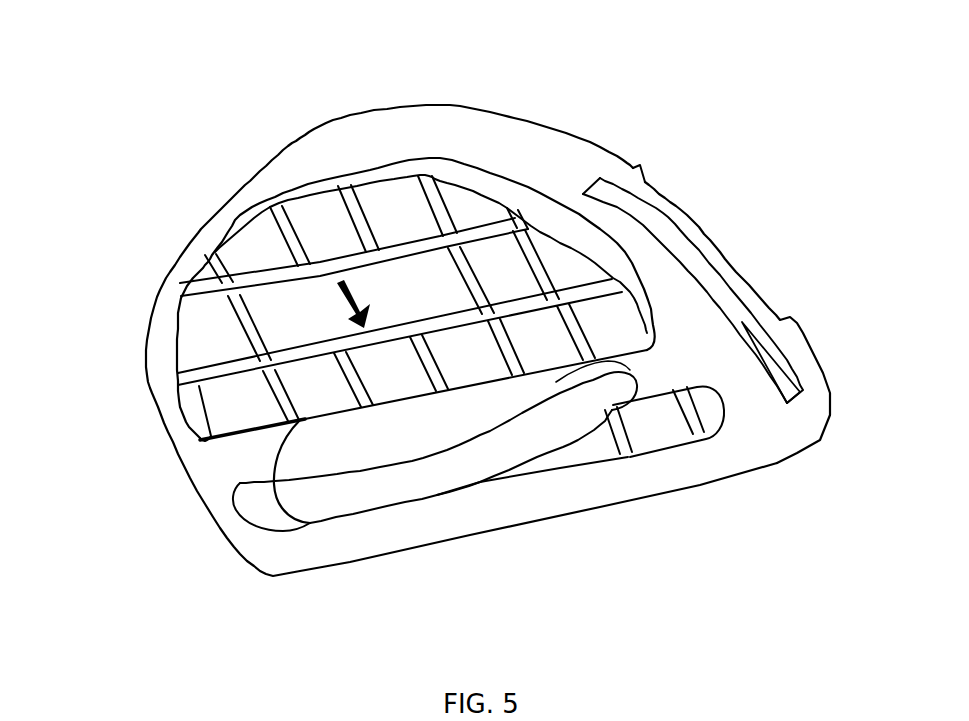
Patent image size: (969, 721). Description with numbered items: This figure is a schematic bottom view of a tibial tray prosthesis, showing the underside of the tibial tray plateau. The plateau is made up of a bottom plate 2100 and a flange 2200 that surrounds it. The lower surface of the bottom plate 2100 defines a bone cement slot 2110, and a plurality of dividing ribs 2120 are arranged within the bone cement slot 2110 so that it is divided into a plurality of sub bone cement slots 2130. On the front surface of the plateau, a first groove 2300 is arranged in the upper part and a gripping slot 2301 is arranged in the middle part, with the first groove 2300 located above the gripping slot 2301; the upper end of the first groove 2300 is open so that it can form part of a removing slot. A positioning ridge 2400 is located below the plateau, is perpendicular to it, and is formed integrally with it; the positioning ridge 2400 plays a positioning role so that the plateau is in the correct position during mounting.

The bottom plate 2100 is at (213, 473).
The flange 2200 is at (440, 110).
The bone cement slot 2110 is at (183, 338).
The dividing ribs 2120 is at (290, 247).
The sub bone cement slots 2130 is at (235, 408).
The first groove 2300 is at (750, 273).
The gripping slot 2301 is at (737, 307).
The positioning ridge 2400 is at (423, 477).